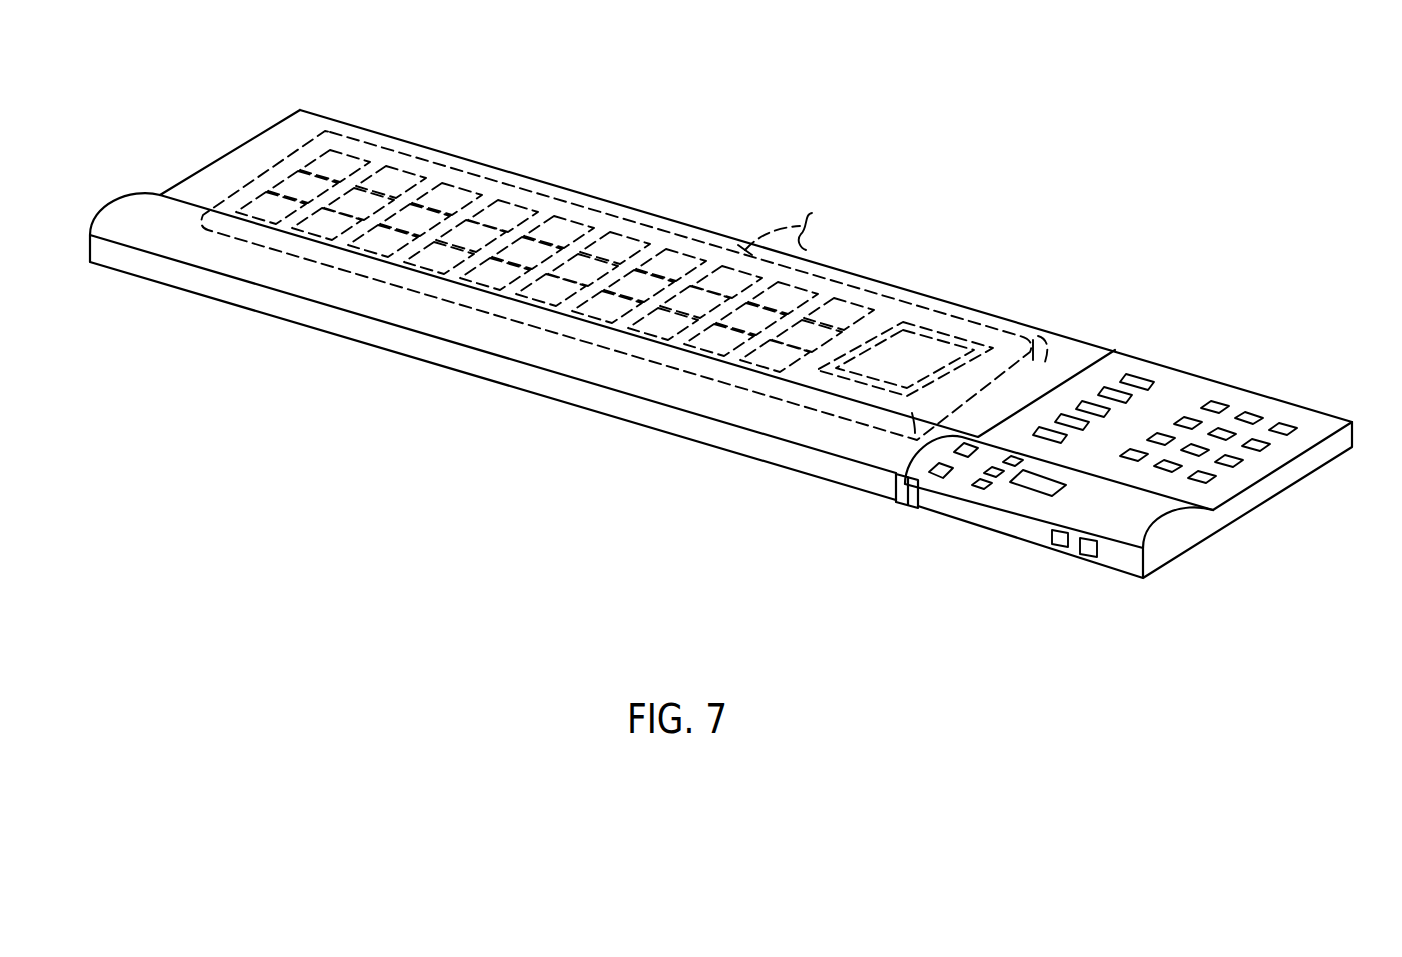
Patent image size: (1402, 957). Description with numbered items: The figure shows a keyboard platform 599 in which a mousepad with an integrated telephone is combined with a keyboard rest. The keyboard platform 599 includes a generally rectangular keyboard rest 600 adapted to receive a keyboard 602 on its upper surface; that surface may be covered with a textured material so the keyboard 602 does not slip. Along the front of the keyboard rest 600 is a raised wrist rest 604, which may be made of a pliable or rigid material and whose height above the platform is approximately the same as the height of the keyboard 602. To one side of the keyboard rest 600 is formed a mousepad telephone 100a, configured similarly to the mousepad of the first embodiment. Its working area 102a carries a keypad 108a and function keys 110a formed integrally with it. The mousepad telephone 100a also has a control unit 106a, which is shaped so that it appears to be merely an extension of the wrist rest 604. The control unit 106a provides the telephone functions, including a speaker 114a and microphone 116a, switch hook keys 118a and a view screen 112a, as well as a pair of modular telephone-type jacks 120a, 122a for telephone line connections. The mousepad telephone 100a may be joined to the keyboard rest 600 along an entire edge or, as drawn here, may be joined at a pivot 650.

The keyboard platform 599 is at (855, 78).
The keyboard rest 600 is at (721, 280).
The keyboard 602 is at (413, 162).
The wrist rest 604 is at (143, 218).
The pivot 650 is at (890, 490).
The mousepad telephone 100a is at (1096, 469).
The working area 102a is at (1207, 395).
The control unit 106a is at (1170, 515).
The keypad 108a is at (1268, 425).
The function keys 110a is at (1110, 377).
The view screen 112a is at (1038, 488).
The speaker 114a is at (963, 462).
The microphone 116a is at (960, 470).
The switch hook keys 118a is at (990, 490).
The RJ-11-type jack 120a is at (1060, 546).
The RJ-11-type jack 122a is at (1090, 556).